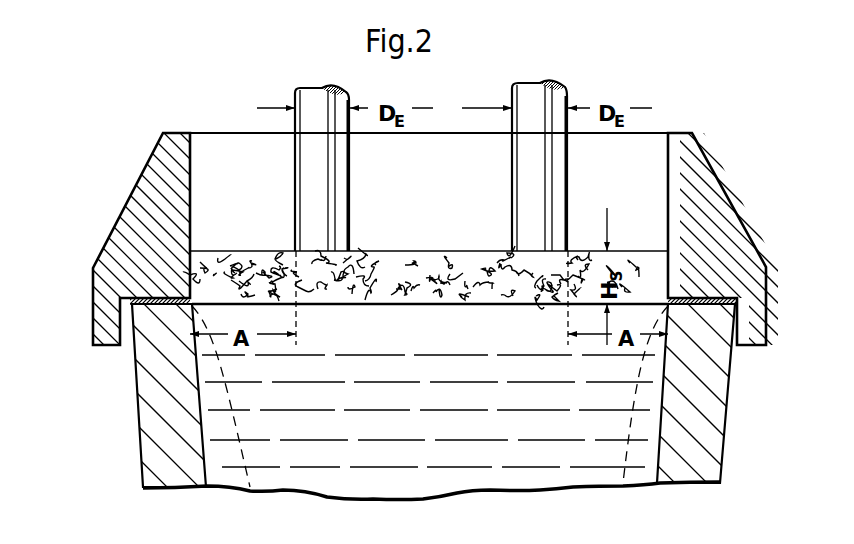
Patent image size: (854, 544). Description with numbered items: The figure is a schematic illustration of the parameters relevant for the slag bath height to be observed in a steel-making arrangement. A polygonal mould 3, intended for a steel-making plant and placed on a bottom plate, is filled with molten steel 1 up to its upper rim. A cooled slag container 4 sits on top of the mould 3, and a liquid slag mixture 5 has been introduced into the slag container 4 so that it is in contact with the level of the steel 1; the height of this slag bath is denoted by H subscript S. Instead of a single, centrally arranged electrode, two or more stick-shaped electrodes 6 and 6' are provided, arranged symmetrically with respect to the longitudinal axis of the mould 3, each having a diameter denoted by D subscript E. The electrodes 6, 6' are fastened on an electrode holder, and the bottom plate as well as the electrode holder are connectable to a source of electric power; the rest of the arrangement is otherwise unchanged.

The molten steel 1 is at (388, 458).
The polygonal mould 3 is at (153, 385).
The cooled slag container 4 is at (135, 216).
The liquid slag mixture 5 is at (253, 256).
The electrode 6 is at (406, 160).
The electrode 6' is at (505, 160).